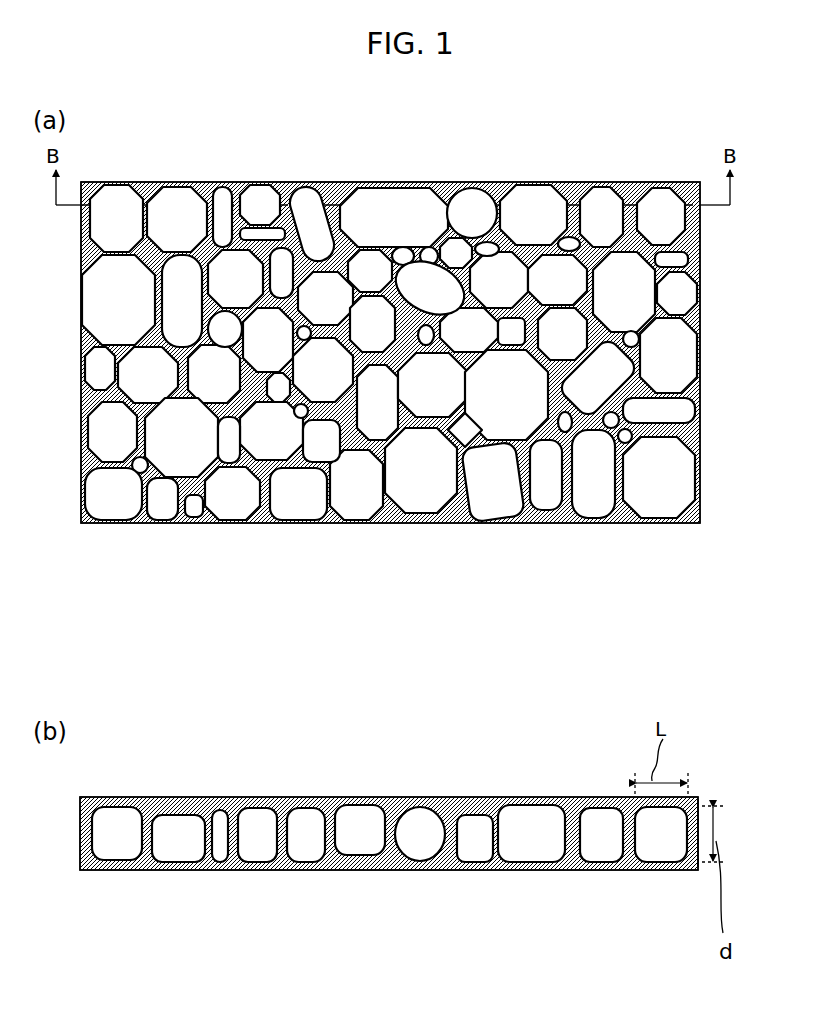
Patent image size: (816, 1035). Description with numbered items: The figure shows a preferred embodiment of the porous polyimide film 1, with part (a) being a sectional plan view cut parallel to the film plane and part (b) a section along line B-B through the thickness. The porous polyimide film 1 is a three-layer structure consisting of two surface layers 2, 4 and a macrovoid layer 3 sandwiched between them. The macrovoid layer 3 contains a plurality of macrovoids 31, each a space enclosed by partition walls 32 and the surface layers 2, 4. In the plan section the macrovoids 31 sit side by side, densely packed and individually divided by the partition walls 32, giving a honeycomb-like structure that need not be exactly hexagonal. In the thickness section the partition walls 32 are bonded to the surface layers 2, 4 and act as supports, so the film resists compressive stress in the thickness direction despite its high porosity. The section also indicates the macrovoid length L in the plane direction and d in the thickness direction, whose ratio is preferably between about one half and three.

The porous polyimide film 1 is at (390, 587).
The surface layer 2 is at (536, 797).
The macrovoid layer 3 is at (753, 806).
The surface layer 4 is at (382, 523).
The macrovoid 31 is at (478, 523).
The partition wall 32 is at (628, 523).